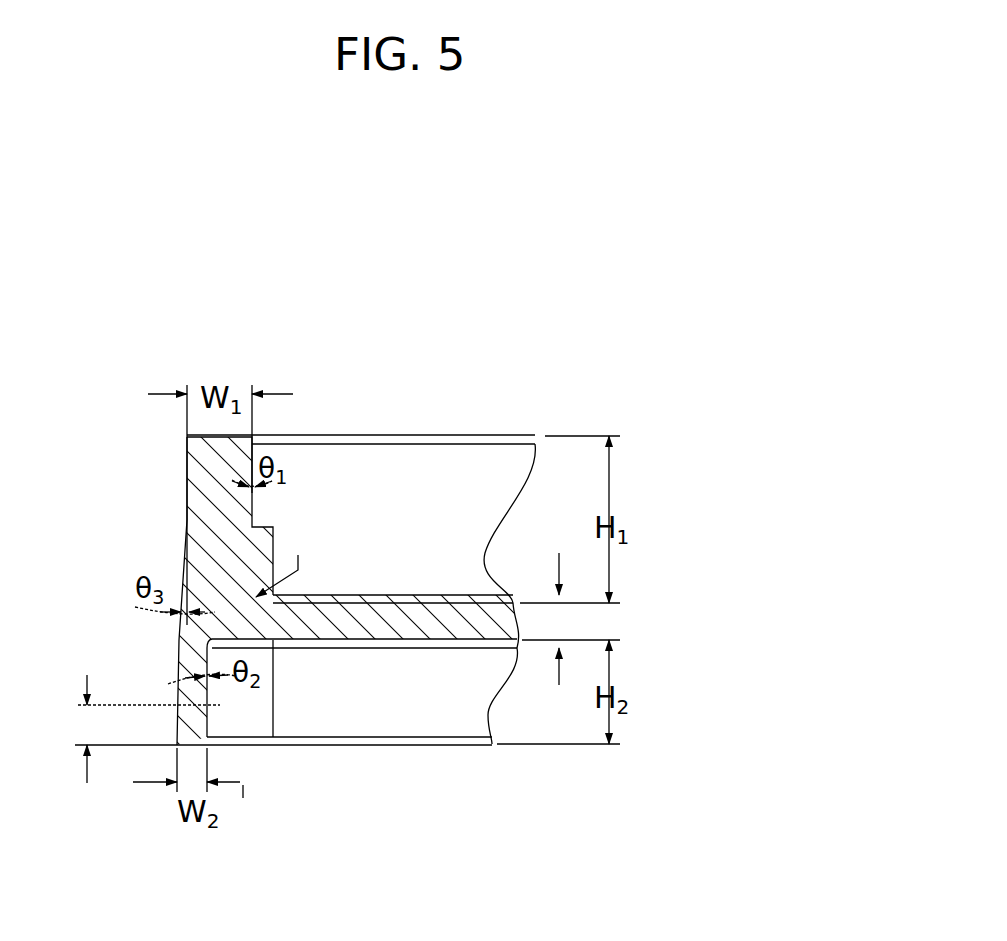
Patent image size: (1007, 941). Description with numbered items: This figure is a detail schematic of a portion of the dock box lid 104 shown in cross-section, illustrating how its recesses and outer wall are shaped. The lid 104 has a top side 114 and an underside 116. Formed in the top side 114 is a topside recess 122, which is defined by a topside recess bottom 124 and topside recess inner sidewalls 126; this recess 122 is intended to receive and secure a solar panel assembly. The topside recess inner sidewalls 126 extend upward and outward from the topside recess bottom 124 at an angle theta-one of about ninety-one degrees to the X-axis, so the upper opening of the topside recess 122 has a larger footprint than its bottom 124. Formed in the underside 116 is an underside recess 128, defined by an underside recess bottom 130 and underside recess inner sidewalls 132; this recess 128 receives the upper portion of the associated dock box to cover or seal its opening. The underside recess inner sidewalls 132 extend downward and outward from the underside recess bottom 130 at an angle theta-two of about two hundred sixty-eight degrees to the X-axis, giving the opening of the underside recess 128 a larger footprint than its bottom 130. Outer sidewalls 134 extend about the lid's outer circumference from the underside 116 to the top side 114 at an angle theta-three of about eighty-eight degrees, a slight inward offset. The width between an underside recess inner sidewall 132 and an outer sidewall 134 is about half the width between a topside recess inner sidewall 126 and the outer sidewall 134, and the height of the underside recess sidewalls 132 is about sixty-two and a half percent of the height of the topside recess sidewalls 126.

The dock box lid 104 is at (580, 299).
The top side 114 is at (437, 435).
The underside 116 is at (453, 746).
The topside recess 122 is at (394, 508).
The topside recess bottom 124 is at (416, 588).
The topside recess inner sidewalls 126 is at (253, 507).
The underside recess 128 is at (310, 688).
The underside recess bottom 130 is at (378, 650).
The underside recess inner sidewalls 132 is at (208, 692).
The outer sidewalls 134 is at (178, 522).